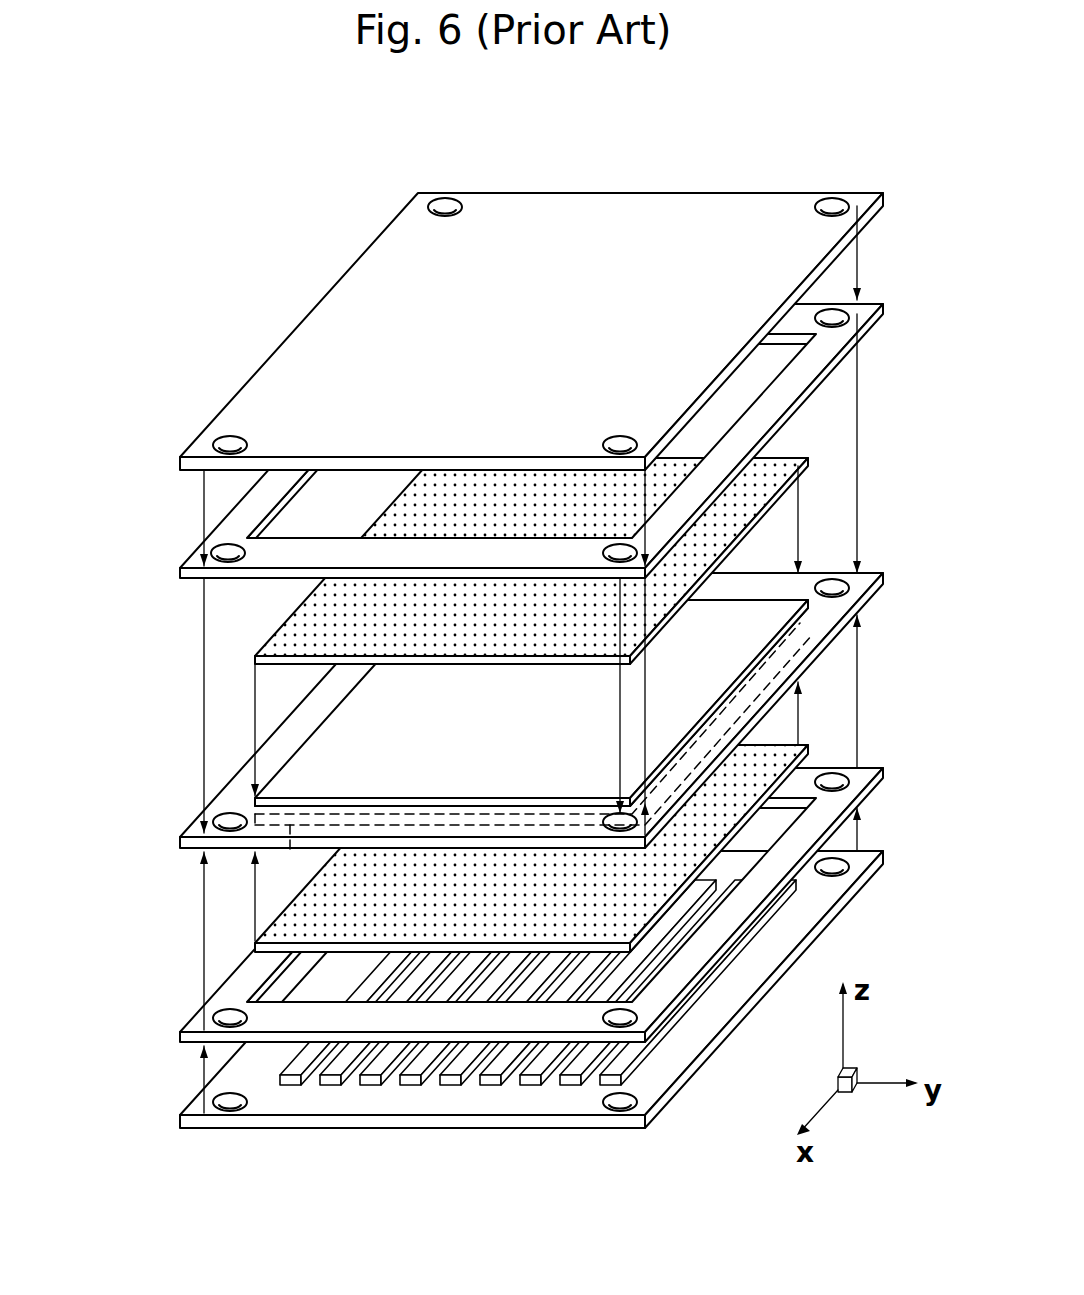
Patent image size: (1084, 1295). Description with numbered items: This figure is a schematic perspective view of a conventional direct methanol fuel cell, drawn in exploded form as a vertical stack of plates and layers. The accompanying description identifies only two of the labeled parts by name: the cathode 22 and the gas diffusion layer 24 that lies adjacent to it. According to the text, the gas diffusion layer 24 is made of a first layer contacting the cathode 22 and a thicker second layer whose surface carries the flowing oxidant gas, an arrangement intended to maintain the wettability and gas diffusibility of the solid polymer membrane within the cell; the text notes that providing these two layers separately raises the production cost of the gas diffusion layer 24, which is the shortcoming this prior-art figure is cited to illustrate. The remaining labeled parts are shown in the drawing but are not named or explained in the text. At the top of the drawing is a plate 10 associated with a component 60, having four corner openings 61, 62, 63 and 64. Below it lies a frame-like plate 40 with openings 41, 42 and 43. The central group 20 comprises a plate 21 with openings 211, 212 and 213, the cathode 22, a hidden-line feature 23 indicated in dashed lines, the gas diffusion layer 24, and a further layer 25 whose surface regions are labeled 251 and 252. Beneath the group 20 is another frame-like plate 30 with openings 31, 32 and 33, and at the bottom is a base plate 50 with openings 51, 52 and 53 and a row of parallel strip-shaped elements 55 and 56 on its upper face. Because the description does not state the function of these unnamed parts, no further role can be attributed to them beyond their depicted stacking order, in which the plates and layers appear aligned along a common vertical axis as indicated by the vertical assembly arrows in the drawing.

The upper housing plate 10 is at (531, 331).
The top cover plate 60 is at (484, 331).
The bolt hole 61 is at (245, 440).
The bolt hole 62 is at (612, 440).
The bolt hole 63 is at (815, 208).
The bolt hole 64 is at (460, 210).
The frame plate 40 is at (512, 415).
The bolt hole 41 is at (212, 550).
The bolt hole 42 is at (603, 553).
The bolt hole 43 is at (845, 310).
The membrane electrode assembly 20 is at (490, 727).
The frame plate 21 is at (514, 711).
The bolt hole 211 is at (213, 820).
The bolt hole 212 is at (615, 808).
The bolt hole 213 is at (840, 580).
The cathode 22 is at (297, 767).
The groove 23 is at (290, 850).
The gas diffusion layer 24 is at (459, 599).
The lower electrode layer 25 is at (520, 834).
The catalyst layer 251 is at (275, 922).
The catalyst layer edge 252 is at (778, 752).
The frame plate 30 is at (526, 884).
The bolt hole 31 is at (247, 1017).
The bolt hole 32 is at (603, 1018).
The bolt hole 33 is at (845, 775).
The bottom plate 50 is at (543, 1011).
The bolt hole 51 is at (245, 1100).
The bolt hole 52 is at (635, 1100).
The bolt hole 53 is at (845, 860).
The electrode bars 55 is at (472, 1086).
The electrode bars 56 is at (603, 1086).